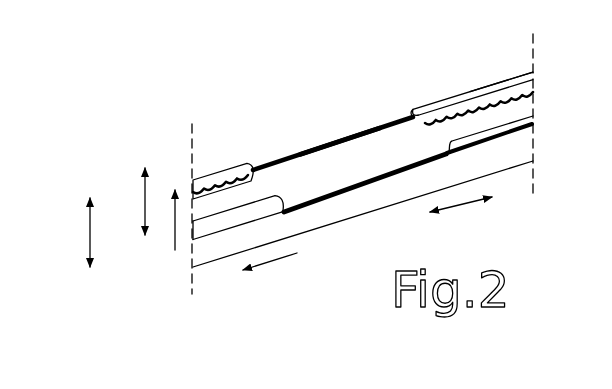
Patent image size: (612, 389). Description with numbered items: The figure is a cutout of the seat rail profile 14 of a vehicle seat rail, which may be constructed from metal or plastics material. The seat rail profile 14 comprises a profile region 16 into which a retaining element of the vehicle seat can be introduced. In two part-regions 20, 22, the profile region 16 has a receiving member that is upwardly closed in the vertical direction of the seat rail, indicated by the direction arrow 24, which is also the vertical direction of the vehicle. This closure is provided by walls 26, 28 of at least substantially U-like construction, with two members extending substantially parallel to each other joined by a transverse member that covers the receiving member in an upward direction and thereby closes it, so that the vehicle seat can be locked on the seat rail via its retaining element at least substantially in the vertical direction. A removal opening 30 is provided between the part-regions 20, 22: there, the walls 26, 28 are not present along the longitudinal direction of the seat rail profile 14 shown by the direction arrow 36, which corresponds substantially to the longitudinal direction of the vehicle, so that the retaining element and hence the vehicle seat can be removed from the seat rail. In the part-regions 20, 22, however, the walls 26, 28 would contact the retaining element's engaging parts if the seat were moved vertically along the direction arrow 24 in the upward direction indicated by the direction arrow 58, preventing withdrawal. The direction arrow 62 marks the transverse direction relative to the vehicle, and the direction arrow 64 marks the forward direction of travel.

The seat rail profile 14 is at (338, 269).
The profile region 16 is at (305, 120).
The part-region 20 is at (218, 162).
The part-region 22 is at (453, 92).
The direction arrow 24 is at (143, 197).
The wall 26 is at (493, 89).
The wall 28 is at (513, 124).
The removal opening 30 is at (348, 120).
The direction arrow 36 is at (463, 210).
The direction arrow 58 is at (173, 243).
The direction arrow 62 is at (88, 236).
The direction arrow 64 is at (279, 260).